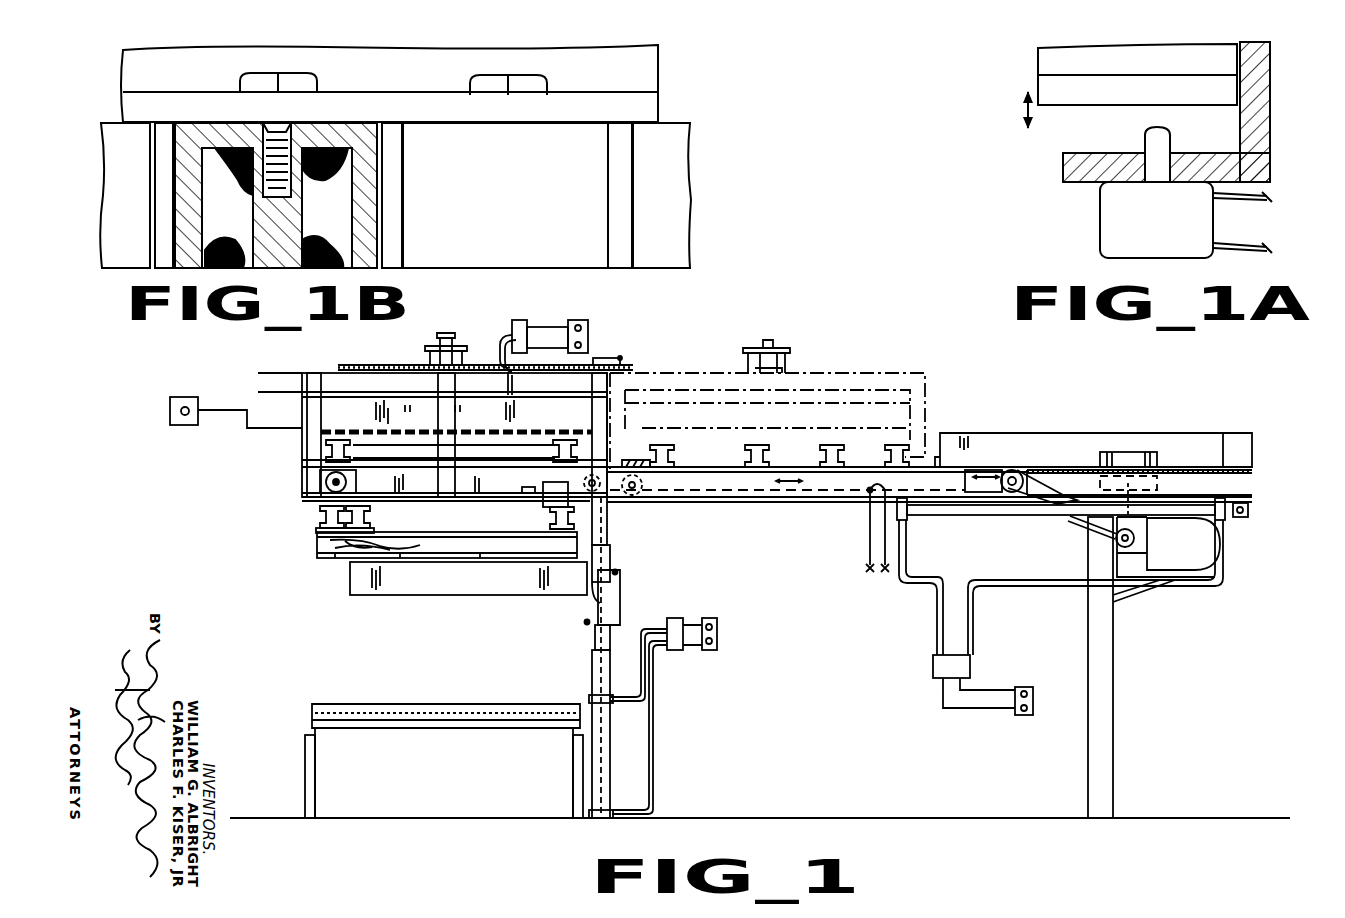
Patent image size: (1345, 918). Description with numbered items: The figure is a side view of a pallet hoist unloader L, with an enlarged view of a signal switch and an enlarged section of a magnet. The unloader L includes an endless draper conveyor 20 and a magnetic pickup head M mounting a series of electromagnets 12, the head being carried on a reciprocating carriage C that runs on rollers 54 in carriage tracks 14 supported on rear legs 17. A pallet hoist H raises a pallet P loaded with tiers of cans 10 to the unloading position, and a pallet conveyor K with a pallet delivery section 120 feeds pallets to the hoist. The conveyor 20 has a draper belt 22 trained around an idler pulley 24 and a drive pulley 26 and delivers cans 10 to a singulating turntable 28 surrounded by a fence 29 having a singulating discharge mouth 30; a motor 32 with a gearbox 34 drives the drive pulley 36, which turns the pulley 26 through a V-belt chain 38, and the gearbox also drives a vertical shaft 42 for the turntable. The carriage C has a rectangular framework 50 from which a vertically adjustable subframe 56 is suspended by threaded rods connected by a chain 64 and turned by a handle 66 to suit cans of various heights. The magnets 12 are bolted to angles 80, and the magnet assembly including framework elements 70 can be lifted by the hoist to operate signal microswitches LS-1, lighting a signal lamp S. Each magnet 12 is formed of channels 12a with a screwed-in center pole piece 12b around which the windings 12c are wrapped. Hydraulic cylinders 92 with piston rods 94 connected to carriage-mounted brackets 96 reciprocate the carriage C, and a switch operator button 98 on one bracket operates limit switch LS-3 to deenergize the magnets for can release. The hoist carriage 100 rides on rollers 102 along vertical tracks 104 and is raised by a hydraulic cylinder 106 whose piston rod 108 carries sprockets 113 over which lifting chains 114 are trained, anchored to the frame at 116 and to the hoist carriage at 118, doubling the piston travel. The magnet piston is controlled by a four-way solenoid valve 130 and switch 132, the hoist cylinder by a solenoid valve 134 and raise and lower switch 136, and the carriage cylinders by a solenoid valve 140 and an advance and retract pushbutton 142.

In FIG. 1, the cans 10 is at (326, 458).
In FIG. 1B, the electromagnets 12 is at (279, 165).
In FIG. 1, the electromagnets 12 is at (512, 438).
In FIG. 1B, the channels 12a is at (213, 126).
In FIG. 1B, the center pole piece 12b is at (323, 220).
In FIG. 1B, the windings 12c is at (352, 165).
In FIG. 1, the carriage tracks 14 is at (772, 490).
In FIG. 1, the rear legs 17 is at (1113, 662).
In FIG. 1, the endless draper conveyor 20 is at (952, 462).
In FIG. 1, the draper belt 22 is at (987, 498).
In FIG. 1, the idler pulley 24 is at (655, 495).
In FIG. 1, the drive pulley 26 is at (1014, 470).
In FIG. 1, the singulating turntable 28 is at (1080, 465).
In FIG. 1, the fence 29 is at (1065, 433).
In FIG. 1, the singulating discharge mouth 30 is at (1235, 440).
In FIG. 1, the motor 32 is at (1186, 557).
In FIG. 1, the gearbox 34 is at (1120, 554).
In FIG. 1, the drive pulley 36 is at (1116, 540).
In FIG. 1, the V-belt chain 38 is at (1080, 522).
In FIG. 1, the vertical shaft 42 is at (1160, 486).
In FIG. 1, the rectangular framework 50 is at (258, 388).
In FIG. 1, the rollers 54 is at (320, 483).
In FIG. 1A, the vertically adjustable subframe 56 is at (1060, 168).
In FIG. 1, the chain 64 is at (368, 386).
In FIG. 1, the handle 66 is at (624, 361).
In FIG. 1A, the framework elements 70 is at (1040, 62).
In FIG. 1B, the magnet mounting angles 80 is at (655, 68).
In FIG. 1, the hydraulic cylinders 92 is at (942, 518).
In FIG. 1, the piston rods 94 is at (758, 495).
In FIG. 1, the carriage-mounted brackets 96 is at (524, 487).
In FIG. 1, the switch operator button 98 is at (561, 504).
In FIG. 1, the hoist carriage 100 is at (410, 592).
In FIG. 1, the rollers 102 is at (617, 573).
In FIG. 1, the vertical tracks 104 is at (612, 556).
In FIG. 1, the hydraulic cylinder 106 is at (580, 750).
In FIG. 1, the piston rod 108 is at (592, 656).
In FIG. 1, the sprockets 113 is at (610, 526).
In FIG. 1, the lifting chains 114 is at (612, 735).
In FIG. 1, the chain anchor to frame 116 is at (640, 806).
In FIG. 1, the chain anchor to hoist carriage 118 is at (620, 590).
In FIG. 1, the pallet delivery section 120 is at (308, 729).
In FIG. 1, the four-way solenoid valve 130 is at (520, 326).
In FIG. 1, the switch 132 is at (590, 336).
In FIG. 1, the solenoid valve 134 is at (672, 652).
In FIG. 1, the raise and lower switch 136 is at (718, 639).
In FIG. 1, the solenoid valve 140 is at (933, 668).
In FIG. 1, the advance and retract pushbutton 142 is at (1033, 715).
In FIG. 1, the unloader L is at (282, 366).
In FIG. 1, the reciprocating carriage C is at (262, 378).
In FIG. 1, the signal lamp S is at (165, 408).
In FIG. 1, the magnetic pickup head M is at (312, 433).
In FIG. 1, the pallet P is at (317, 545).
In FIG. 1, the pallet hoist H is at (348, 583).
In FIG. 1, the pallet conveyor K is at (308, 716).
In FIG. 1A, the signal microswitches LS-1 is at (1180, 227).
In FIG. 1, the limit switch LS-3 is at (862, 500).